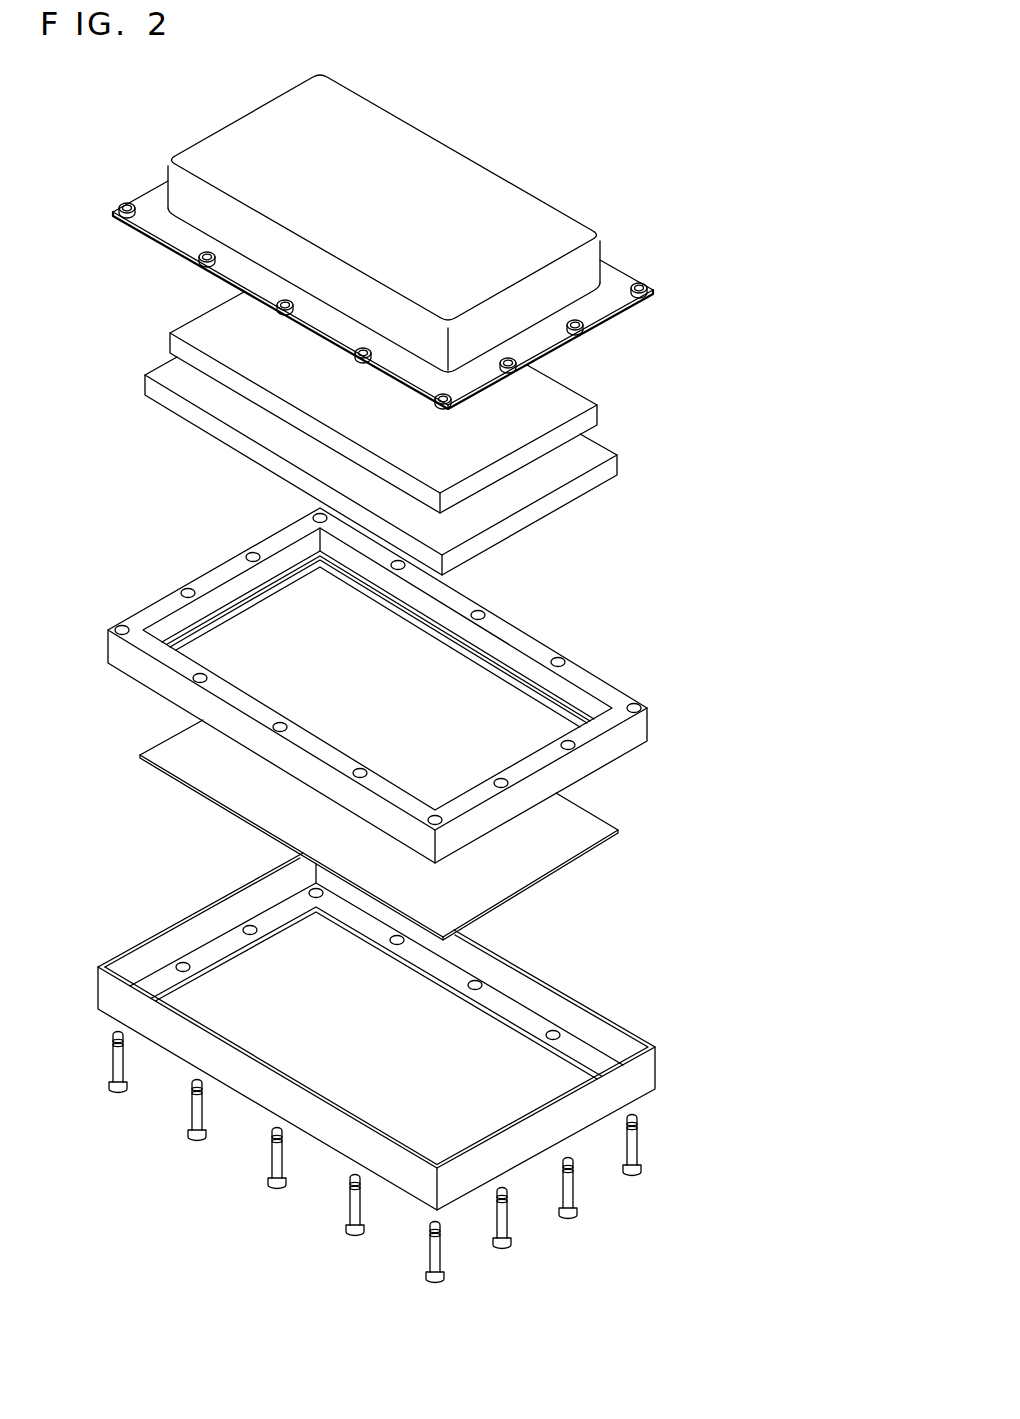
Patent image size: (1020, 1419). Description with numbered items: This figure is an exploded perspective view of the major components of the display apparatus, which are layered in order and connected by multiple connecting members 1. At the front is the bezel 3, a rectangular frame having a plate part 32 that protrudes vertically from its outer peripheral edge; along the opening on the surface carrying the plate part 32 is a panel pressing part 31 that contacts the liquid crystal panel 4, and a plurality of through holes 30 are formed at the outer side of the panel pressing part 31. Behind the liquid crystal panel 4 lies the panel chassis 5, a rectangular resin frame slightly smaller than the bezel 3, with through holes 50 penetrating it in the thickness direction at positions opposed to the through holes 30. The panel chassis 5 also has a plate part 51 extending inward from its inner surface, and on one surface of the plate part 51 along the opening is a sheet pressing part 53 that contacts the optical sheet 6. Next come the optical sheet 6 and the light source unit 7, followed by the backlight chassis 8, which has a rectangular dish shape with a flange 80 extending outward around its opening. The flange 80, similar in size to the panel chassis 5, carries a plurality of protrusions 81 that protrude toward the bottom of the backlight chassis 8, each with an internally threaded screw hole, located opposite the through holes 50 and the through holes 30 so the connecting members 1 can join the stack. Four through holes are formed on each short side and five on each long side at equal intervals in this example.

The connecting member 1 is at (118, 1094).
The bezel 3 is at (411, 1026).
The through hole 30 is at (249, 928).
The panel pressing part 31 is at (420, 990).
The plate part 32 is at (658, 1070).
The liquid crystal panel 4 is at (622, 832).
The panel chassis 5 is at (384, 685).
The through hole 50 is at (187, 590).
The plate part 51 is at (284, 598).
The sheet pressing part 53 is at (355, 597).
The optical sheet 6 is at (620, 457).
The light source unit 7 is at (598, 408).
The backlight chassis 8 is at (530, 201).
The flange 80 is at (618, 264).
The protrusion 81 is at (122, 205).